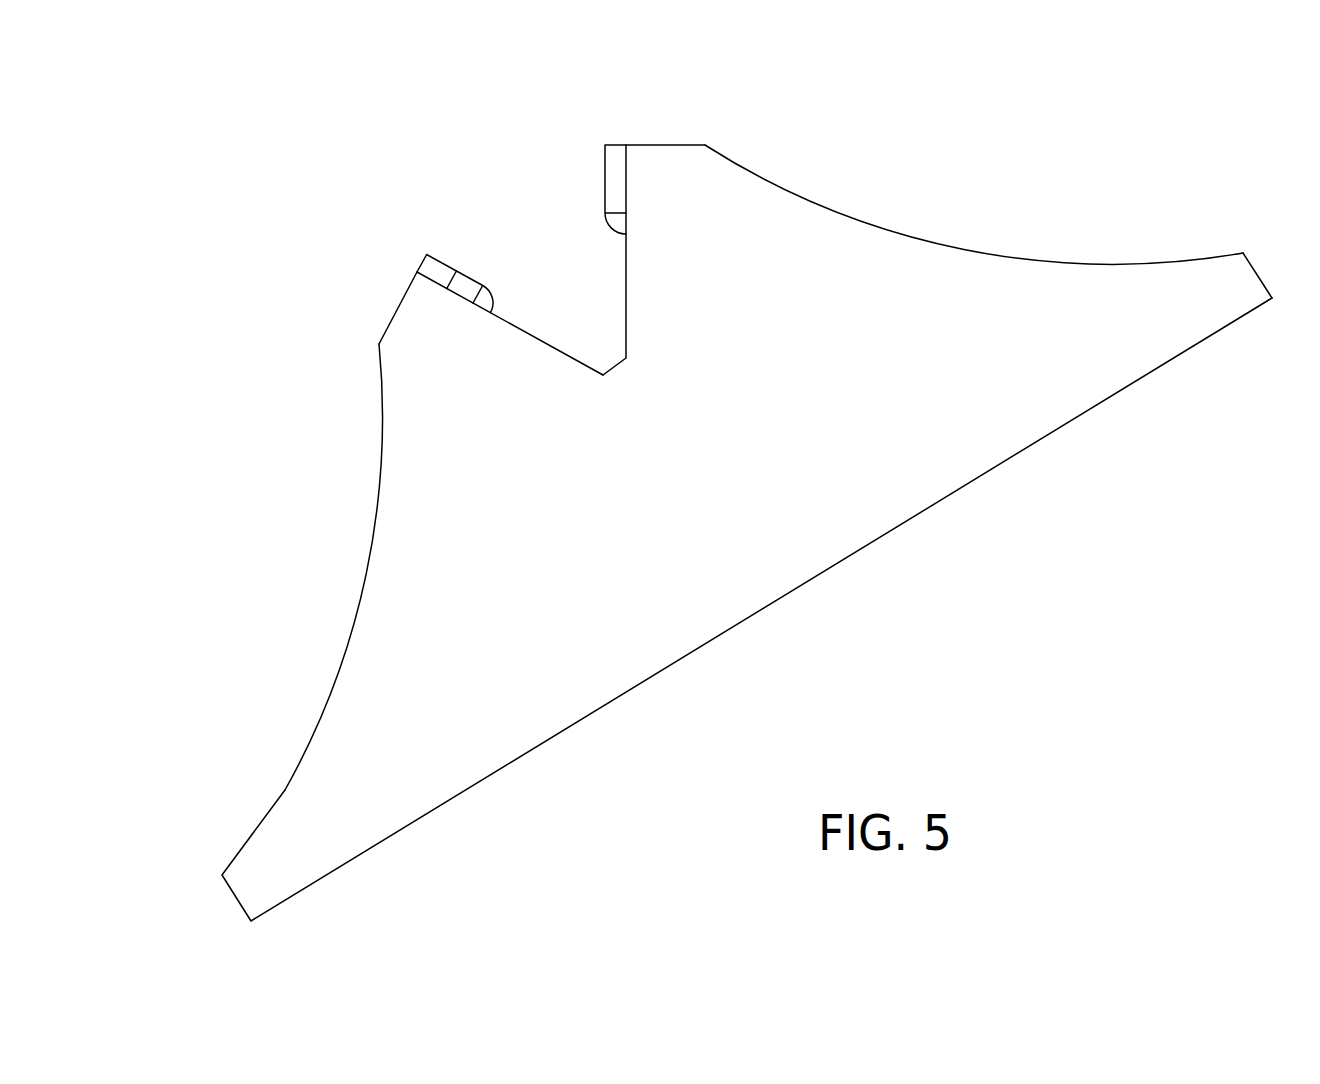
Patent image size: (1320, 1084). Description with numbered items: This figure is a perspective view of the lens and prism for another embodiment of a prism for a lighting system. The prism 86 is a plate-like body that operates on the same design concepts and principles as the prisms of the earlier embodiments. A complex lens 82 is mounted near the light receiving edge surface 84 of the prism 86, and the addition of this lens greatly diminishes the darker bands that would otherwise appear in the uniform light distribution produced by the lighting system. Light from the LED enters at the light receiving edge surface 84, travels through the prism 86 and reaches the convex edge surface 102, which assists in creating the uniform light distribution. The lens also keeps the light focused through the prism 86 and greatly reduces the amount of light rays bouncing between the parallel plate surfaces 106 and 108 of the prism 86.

The complex lens 82 is at (622, 182).
The light receiving edge surface 84 is at (626, 303).
The prism 86 is at (695, 503).
The convex edge surface 102 is at (873, 218).
The parallel plate surface 106 is at (873, 308).
The parallel plate surface 108 is at (1138, 260).